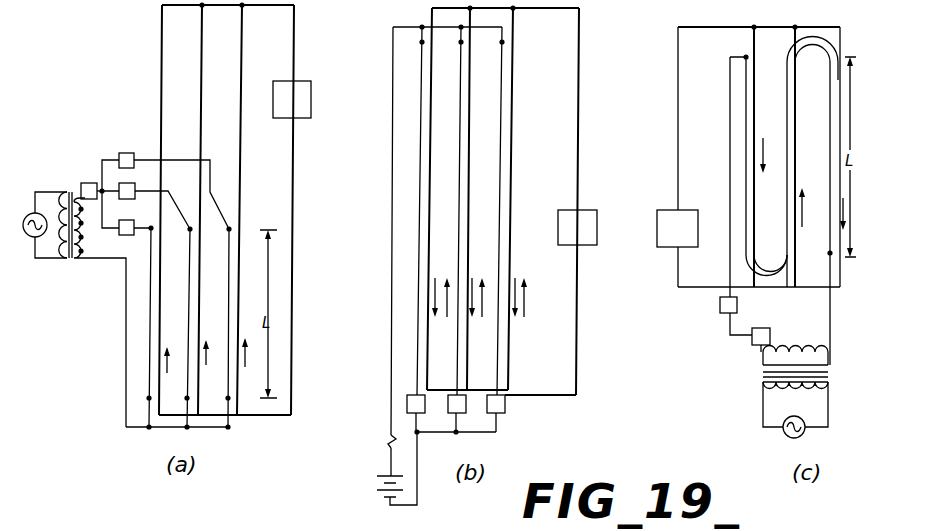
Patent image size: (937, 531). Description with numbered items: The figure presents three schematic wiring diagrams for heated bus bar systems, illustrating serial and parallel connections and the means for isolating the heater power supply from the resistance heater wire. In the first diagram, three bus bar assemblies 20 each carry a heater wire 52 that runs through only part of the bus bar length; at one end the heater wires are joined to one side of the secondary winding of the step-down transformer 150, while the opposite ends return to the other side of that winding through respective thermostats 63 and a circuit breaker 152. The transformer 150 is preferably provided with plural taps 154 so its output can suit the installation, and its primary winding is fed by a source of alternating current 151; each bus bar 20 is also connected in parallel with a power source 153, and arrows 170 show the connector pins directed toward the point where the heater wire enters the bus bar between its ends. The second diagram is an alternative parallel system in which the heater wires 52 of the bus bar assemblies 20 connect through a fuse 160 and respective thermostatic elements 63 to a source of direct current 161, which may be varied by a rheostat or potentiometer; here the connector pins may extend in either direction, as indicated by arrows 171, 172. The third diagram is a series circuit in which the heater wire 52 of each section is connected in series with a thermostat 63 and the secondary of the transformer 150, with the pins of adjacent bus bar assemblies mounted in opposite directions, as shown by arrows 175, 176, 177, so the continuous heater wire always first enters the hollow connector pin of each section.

In FIG. 19a, the bus bar assembly 20 is at (237, 330).
In FIG. 19b, the bus bar assembly 20 is at (503, 87).
In FIG. 19c, the bus bar assembly 20 is at (752, 175).
In FIG. 19a, the heater wire 52 is at (229, 282).
In FIG. 19b, the heater wire 52 is at (512, 138).
In FIG. 19c, the heater wire 52 is at (747, 124).
In FIG. 19a, the thermostat 63 is at (135, 228).
In FIG. 19b, the thermostat 63 is at (496, 415).
In FIG. 19c, the thermostat 63 is at (737, 301).
In FIG. 19a, the transformer 150 is at (72, 180).
In FIG. 19c, the transformer 150 is at (750, 371).
In FIG. 19a, the source of alternating current 151 is at (28, 213).
In FIG. 19c, the source of alternating current 151 is at (784, 431).
In FIG. 19a, the circuit breaker 152 is at (89, 182).
In FIG. 19c, the circuit breaker 152 is at (770, 337).
In FIG. 19a, the power source 153 is at (283, 81).
In FIG. 19b, the power source 153 is at (568, 210).
In FIG. 19c, the power source 153 is at (698, 228).
In FIG. 19a, the taps 154 is at (81, 209).
In FIG. 19b, the fuse 160 is at (389, 441).
In FIG. 19b, the source of direct current 161 is at (376, 483).
In FIG. 19a, the arrows 170 is at (245, 368).
In FIG. 19b, the arrows 171 is at (512, 287).
In FIG. 19b, the arrows 172 is at (527, 318).
In FIG. 19c, the arrow 175 is at (760, 143).
In FIG. 19c, the arrow 176 is at (801, 210).
In FIG. 19c, the arrow 177 is at (842, 201).